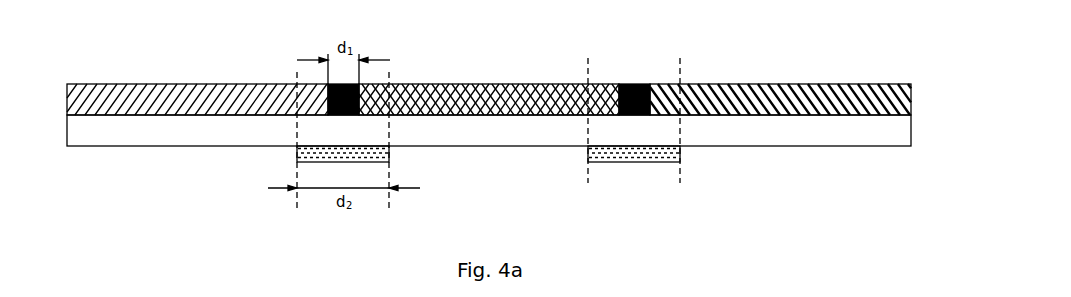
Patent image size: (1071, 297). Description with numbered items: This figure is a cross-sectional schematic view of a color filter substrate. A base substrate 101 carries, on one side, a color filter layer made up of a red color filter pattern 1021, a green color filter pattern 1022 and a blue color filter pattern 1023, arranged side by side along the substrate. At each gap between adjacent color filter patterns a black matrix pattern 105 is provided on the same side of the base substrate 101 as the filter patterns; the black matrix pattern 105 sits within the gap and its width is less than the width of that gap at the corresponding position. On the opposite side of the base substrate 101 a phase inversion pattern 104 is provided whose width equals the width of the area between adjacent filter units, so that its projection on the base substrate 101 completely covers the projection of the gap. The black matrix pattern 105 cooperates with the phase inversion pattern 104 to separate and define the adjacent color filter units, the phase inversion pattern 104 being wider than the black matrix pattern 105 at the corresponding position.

The base substrate 101 is at (489, 166).
The red color filter pattern 1021 is at (197, 65).
The green color filter pattern 1022 is at (489, 65).
The blue color filter pattern 1023 is at (780, 65).
The phase inversion pattern 104 is at (499, 181).
The black matrix pattern 105 is at (524, 65).